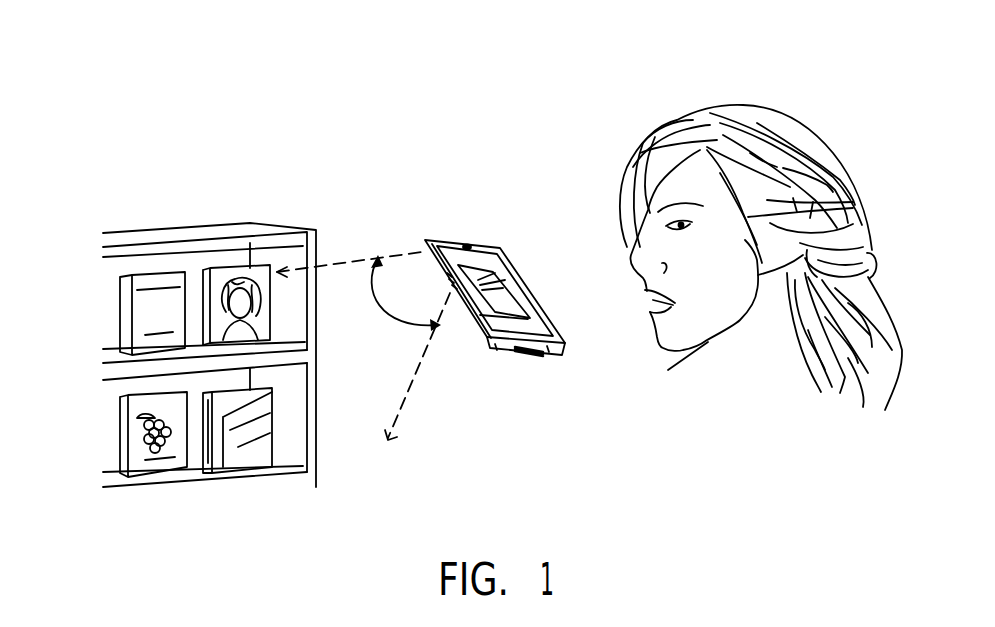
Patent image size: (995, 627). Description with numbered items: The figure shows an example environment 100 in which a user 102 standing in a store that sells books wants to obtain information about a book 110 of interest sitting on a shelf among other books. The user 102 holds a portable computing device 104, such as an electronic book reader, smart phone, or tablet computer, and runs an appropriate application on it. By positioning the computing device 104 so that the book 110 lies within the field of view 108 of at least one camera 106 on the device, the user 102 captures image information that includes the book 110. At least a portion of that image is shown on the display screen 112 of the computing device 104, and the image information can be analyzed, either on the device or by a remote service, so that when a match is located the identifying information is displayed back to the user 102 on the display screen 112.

The environment 100 is at (169, 96).
The user 102 is at (621, 166).
The computing device 104 is at (499, 351).
The camera 106 is at (467, 246).
The field of view 108 is at (363, 346).
The book 110 is at (257, 466).
The display screen 112 is at (517, 290).